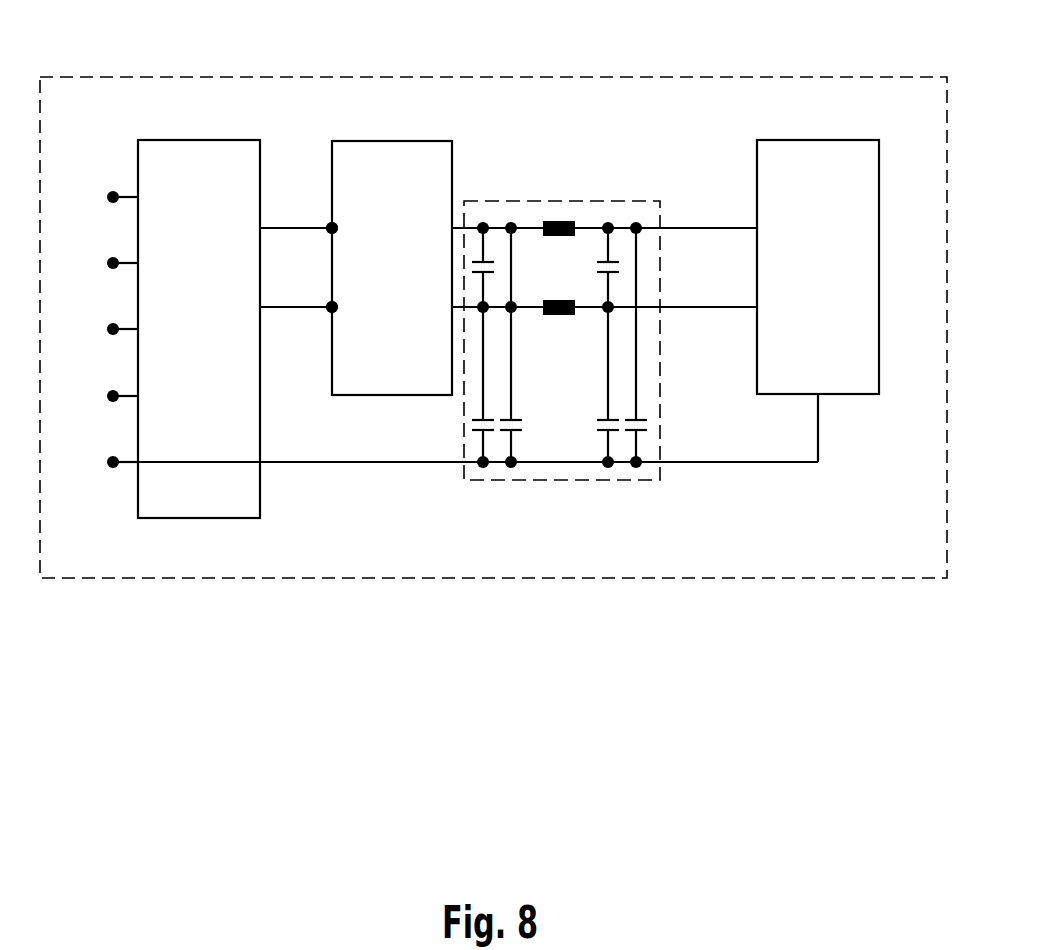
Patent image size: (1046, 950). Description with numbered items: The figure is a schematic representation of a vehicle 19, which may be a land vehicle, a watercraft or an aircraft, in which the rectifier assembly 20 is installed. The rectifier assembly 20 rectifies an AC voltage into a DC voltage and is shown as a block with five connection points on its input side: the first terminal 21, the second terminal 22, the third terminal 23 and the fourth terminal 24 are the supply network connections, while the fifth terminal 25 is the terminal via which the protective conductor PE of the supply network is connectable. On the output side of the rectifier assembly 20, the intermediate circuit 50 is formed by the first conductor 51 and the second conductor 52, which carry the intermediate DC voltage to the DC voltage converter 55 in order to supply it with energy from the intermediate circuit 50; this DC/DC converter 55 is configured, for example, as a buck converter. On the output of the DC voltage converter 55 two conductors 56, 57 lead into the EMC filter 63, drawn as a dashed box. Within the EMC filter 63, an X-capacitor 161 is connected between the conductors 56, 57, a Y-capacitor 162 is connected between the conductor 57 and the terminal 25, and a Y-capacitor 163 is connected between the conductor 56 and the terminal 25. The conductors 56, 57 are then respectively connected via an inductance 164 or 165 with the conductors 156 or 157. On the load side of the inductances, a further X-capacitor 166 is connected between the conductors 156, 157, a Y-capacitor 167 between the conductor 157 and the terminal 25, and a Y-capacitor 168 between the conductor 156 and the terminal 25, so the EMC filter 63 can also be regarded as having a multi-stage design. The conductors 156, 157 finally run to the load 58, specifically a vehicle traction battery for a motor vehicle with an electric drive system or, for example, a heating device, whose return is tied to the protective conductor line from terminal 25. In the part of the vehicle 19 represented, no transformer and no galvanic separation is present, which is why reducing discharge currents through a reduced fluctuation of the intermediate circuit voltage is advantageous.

The vehicle 19 is at (823, 77).
The rectifier assembly 20 is at (199, 329).
The first terminal 21 is at (113, 194).
The second terminal 22 is at (113, 260).
The third terminal 23 is at (113, 326).
The fourth terminal 24 is at (113, 393).
The fifth terminal 25 is at (113, 459).
The intermediate circuit 50 is at (295, 340).
The first conductor 51 is at (275, 226).
The second conductor 52 is at (275, 305).
The DC voltage converter 55 is at (392, 268).
The conductor 56 is at (457, 226).
The conductor 57 is at (462, 305).
The load 58 is at (818, 267).
The EMC filter 63 is at (553, 200).
The conductor 156 is at (687, 227).
The conductor 157 is at (687, 306).
The X-capacitor 161 is at (493, 265).
The Y-capacitor 162 is at (480, 432).
The Y-capacitor 163 is at (507, 432).
The inductance 164 is at (565, 221).
The inductance 165 is at (557, 317).
The X-capacitor 166 is at (612, 265).
The Y-capacitor 167 is at (603, 432).
The Y-capacitor 168 is at (645, 432).